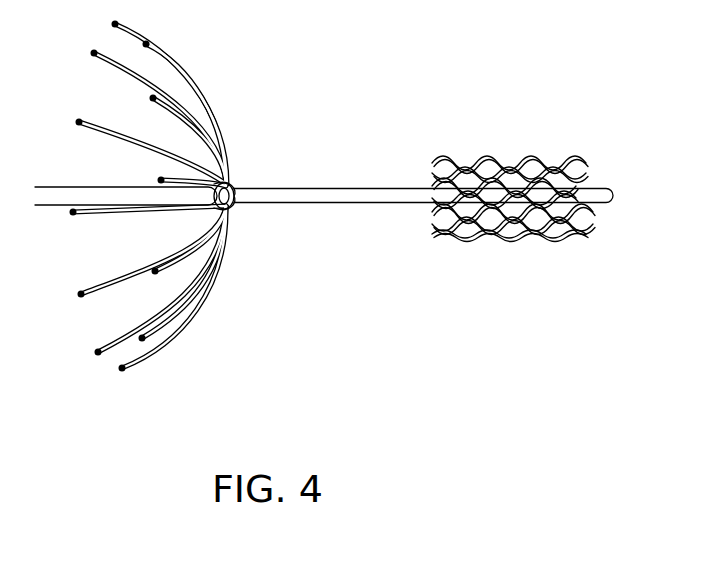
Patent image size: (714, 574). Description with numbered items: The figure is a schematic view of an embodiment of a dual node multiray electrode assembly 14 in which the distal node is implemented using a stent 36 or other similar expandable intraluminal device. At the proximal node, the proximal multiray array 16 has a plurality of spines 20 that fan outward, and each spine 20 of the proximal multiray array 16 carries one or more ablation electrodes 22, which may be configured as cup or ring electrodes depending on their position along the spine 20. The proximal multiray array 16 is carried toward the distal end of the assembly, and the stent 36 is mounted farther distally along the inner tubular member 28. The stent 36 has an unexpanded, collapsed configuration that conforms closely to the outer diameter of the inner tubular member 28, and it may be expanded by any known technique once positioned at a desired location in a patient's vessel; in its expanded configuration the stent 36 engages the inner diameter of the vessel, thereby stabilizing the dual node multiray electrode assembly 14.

The dual node multiray electrode assembly 14 is at (324, 228).
The proximal multiray array 16 is at (135, 228).
The spines 20 is at (118, 136).
The ablation electrodes 22 is at (80, 292).
The inner tubular member 28 is at (343, 187).
The stent 36 is at (522, 152).